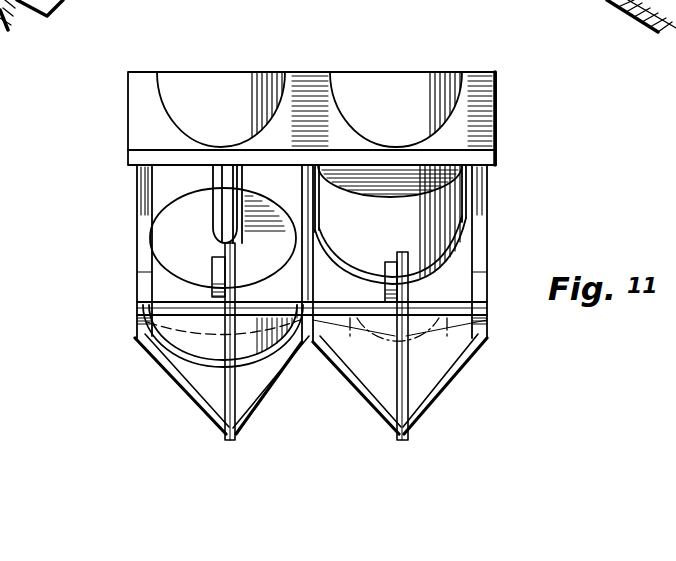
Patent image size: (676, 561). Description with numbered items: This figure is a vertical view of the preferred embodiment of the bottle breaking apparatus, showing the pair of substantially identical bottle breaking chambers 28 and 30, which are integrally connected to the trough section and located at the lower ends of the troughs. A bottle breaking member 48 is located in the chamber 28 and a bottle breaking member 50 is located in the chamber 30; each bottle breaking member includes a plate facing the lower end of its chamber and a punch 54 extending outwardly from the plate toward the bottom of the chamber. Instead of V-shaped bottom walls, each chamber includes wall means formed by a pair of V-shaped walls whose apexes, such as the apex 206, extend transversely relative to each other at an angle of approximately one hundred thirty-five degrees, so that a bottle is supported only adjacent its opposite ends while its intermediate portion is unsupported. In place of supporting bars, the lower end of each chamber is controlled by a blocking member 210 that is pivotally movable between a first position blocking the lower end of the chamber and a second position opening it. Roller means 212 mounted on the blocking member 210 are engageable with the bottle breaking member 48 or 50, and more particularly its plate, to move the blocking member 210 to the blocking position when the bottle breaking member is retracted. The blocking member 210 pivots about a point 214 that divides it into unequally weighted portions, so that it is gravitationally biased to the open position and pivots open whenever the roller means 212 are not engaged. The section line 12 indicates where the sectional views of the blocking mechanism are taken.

The section line 12- 12 is at (221, 28).
The bottle breaking chamber 28 is at (460, 261).
The bottle breaking chamber 30 is at (166, 182).
The bottle breaking member 48 is at (438, 200).
The bottle breaking member 50 is at (166, 226).
The punch 54 is at (596, 0).
The apex 206 is at (178, 380).
The blocking member 210 is at (236, 418).
The roller means 212 is at (213, 278).
The pivot point 214 is at (148, 331).